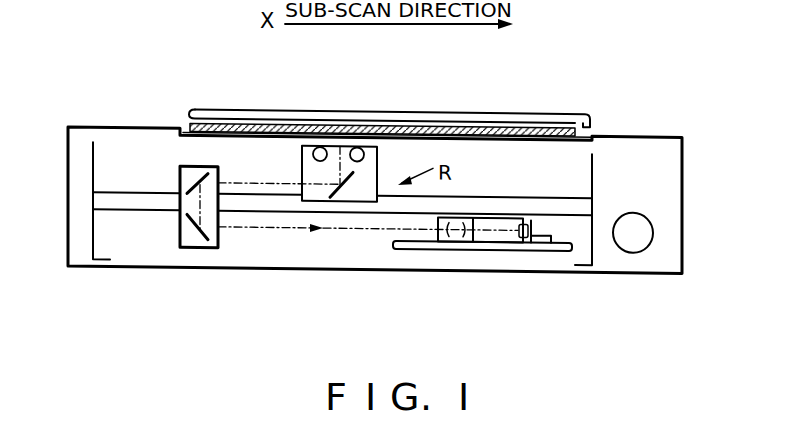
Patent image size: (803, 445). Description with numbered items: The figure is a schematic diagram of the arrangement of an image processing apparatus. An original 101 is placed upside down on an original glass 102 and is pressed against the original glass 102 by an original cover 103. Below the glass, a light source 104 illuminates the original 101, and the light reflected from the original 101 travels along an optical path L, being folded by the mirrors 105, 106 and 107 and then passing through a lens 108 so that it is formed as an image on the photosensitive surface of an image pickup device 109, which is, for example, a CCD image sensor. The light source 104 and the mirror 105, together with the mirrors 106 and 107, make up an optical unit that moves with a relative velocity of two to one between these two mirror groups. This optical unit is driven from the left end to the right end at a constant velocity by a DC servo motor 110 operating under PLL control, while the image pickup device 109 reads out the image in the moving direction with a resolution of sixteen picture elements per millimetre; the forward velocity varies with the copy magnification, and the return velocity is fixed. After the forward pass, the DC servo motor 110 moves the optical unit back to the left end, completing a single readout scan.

The original 101 is at (235, 120).
The original glass 102 is at (185, 129).
The original cover 103 is at (528, 107).
The light source 104 is at (355, 144).
The mirror 105 is at (342, 187).
The mirror 106 is at (186, 184).
The mirror 107 is at (187, 221).
The lens 108 is at (457, 231).
The image pickup device 109 is at (517, 230).
The DC servo motor 110 is at (633, 246).
The optical path L is at (268, 225).